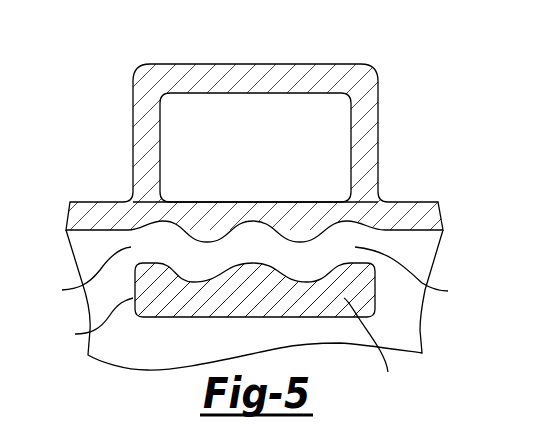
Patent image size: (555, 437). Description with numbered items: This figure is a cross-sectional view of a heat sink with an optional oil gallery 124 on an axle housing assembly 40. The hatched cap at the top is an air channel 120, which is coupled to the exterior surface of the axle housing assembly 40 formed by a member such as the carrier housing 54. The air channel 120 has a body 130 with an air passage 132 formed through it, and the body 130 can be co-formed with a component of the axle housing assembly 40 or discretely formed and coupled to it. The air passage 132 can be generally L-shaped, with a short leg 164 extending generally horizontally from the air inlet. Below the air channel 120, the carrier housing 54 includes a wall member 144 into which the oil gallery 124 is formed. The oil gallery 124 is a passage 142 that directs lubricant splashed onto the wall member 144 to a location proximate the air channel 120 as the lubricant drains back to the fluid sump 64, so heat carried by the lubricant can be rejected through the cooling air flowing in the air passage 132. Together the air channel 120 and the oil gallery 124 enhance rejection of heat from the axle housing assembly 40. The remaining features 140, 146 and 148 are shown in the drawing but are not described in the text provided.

The air channel 120 is at (128, 55).
The body 130 is at (371, 121).
The air passage 132 is at (267, 164).
The carrier housing 54 is at (406, 206).
The axle housing assembly 40 is at (106, 198).
The base portion 140 is at (13, 152).
The short leg 164 is at (86, 234).
The curved surface 146 is at (80, 275).
The wall member 144 is at (222, 347).
The passage 142 is at (266, 256).
The curved surface 148 is at (417, 273).
The fluid sump 64 is at (176, 355).
The oil gallery 124 is at (440, 338).